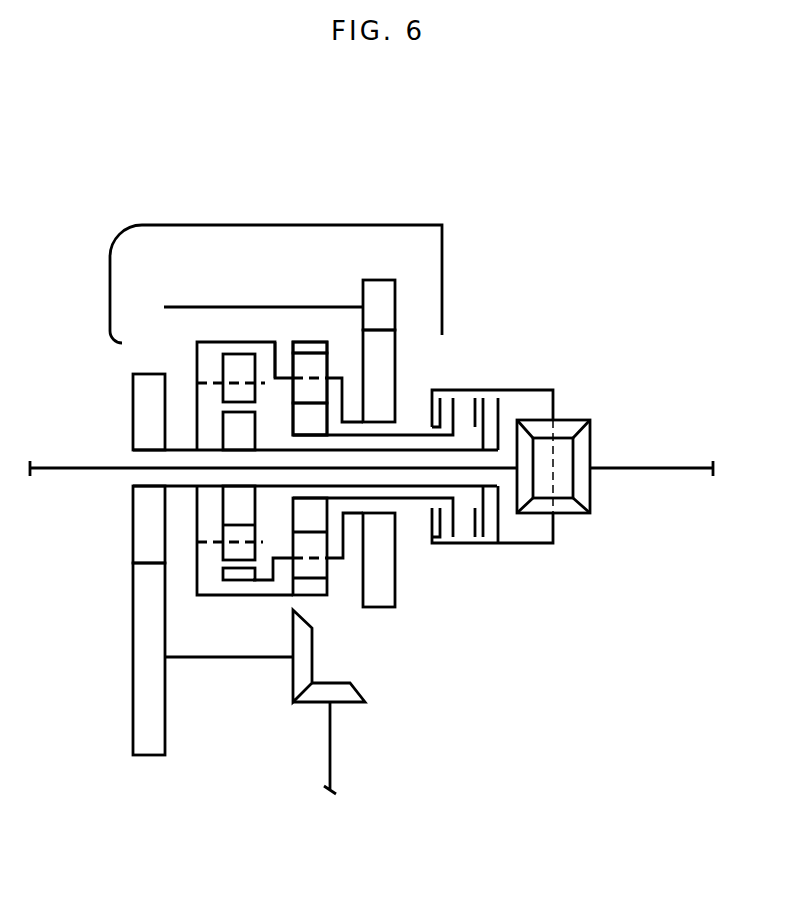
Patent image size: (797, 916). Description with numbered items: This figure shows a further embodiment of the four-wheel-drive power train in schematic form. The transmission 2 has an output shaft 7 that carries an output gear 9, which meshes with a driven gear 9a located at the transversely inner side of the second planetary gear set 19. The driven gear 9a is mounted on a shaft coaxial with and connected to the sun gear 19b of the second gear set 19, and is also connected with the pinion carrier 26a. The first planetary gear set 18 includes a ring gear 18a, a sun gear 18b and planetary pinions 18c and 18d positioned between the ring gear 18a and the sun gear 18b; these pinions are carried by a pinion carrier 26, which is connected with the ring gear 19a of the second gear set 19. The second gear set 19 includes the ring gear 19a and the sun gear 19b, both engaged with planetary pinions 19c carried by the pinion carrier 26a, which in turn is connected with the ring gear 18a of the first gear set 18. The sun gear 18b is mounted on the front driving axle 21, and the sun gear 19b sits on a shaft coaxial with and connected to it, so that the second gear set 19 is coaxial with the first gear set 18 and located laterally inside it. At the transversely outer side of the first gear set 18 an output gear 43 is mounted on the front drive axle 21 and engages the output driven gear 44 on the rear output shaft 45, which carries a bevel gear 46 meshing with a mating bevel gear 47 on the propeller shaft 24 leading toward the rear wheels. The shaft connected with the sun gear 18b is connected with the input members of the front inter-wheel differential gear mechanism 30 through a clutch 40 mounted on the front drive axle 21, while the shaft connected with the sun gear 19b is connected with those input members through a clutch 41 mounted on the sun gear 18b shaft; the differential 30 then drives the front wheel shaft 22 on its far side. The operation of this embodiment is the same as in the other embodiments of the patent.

The transmission 2 is at (355, 224).
The output shaft 7 is at (285, 306).
The output gear 9 is at (395, 297).
The driven gear 9a is at (387, 358).
The first planetary gear set 18 is at (232, 592).
The ring gear 18a is at (236, 360).
The sun gear 18b is at (227, 422).
The planetary pinion 18c is at (228, 373).
The planetary pinion 18d is at (222, 533).
The second planetary gear set 19 is at (315, 598).
The ring gear 19a is at (302, 346).
The sun gear 19b is at (318, 415).
The planetary pinions 19c is at (322, 368).
The front driving axle 21 is at (65, 470).
The rear output shaft 22 is at (668, 468).
The propeller shaft 24 is at (333, 752).
The pinion carrier 26 is at (210, 385).
The pinion carrier 26a is at (267, 352).
The front inter-wheel differential gear mechanism 30 is at (580, 420).
The clutch 40 is at (490, 390).
The clutch 41 is at (447, 390).
The output gear 43 is at (142, 545).
The output driven gear 44 is at (145, 648).
The rear output shaft 45 is at (256, 656).
The bevel gear 46 is at (305, 670).
The bevel driven gear 47 is at (355, 694).